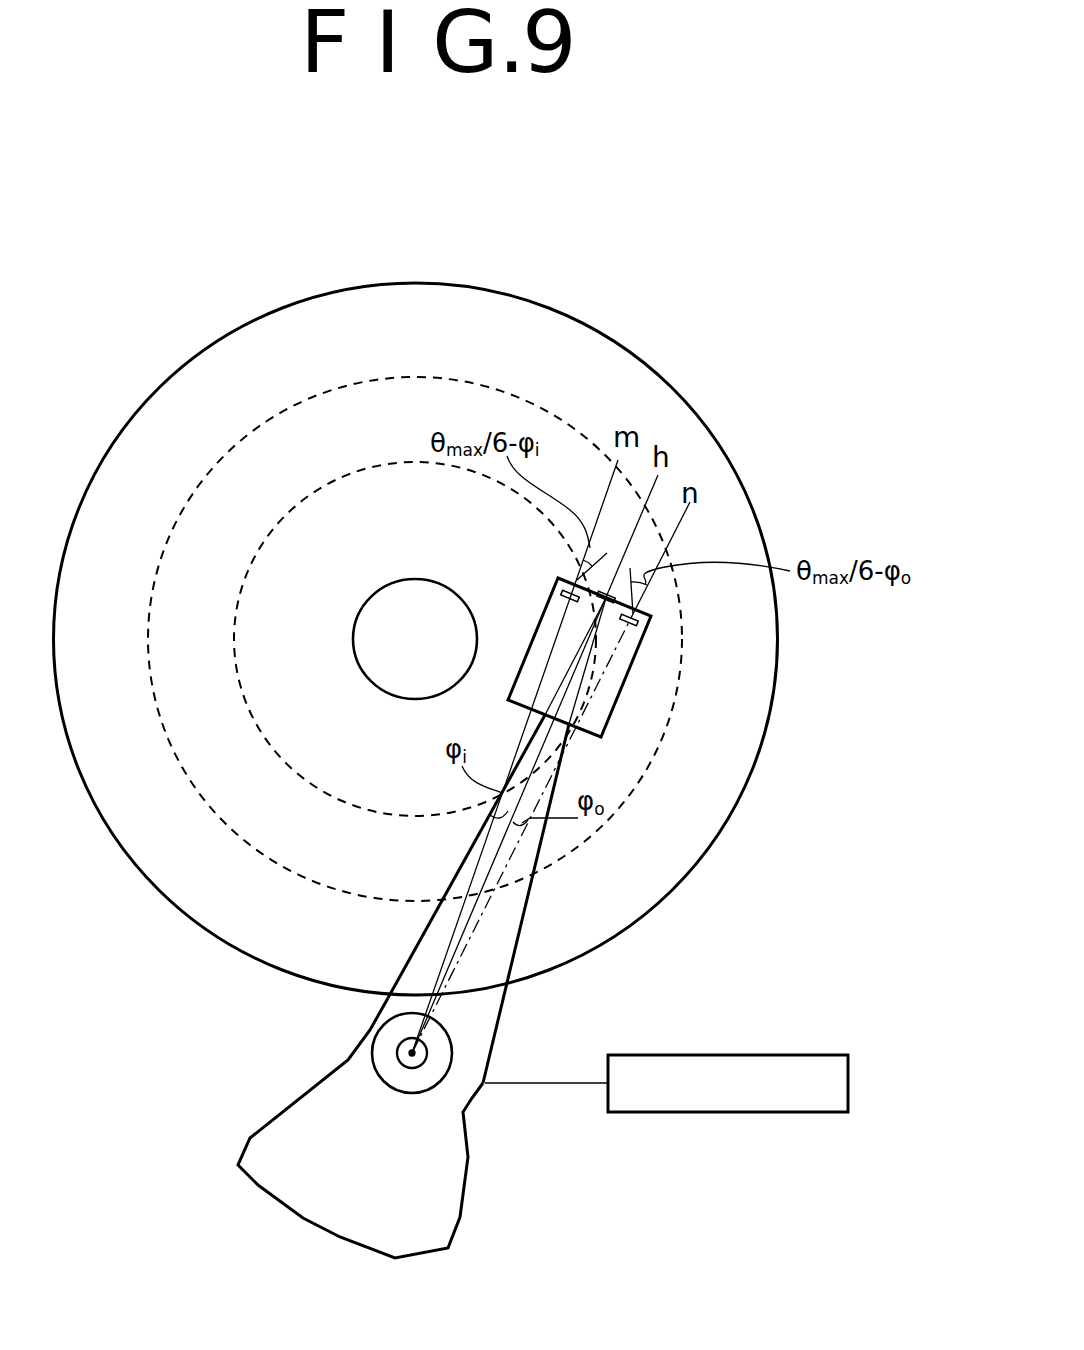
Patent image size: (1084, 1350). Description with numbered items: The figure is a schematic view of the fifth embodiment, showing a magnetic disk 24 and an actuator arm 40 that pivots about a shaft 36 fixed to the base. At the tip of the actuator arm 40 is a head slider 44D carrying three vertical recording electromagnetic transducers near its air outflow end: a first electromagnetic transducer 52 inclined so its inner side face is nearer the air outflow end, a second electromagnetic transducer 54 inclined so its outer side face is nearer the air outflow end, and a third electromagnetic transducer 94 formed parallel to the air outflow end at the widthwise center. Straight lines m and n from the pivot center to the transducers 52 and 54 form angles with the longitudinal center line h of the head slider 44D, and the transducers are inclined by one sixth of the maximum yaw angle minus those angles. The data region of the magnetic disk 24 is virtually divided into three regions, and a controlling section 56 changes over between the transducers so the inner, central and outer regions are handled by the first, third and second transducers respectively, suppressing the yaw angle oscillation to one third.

The magnetic disk 24 is at (415, 297).
The shaft 36 is at (392, 1047).
The actuator arm 40 is at (497, 1000).
The head slider 44D is at (618, 694).
The first electromagnetic transducer 52 is at (562, 596).
The second electromagnetic transducer 54 is at (640, 622).
The third electromagnetic transducer 94 is at (606, 603).
The controlling section 56 is at (849, 1083).